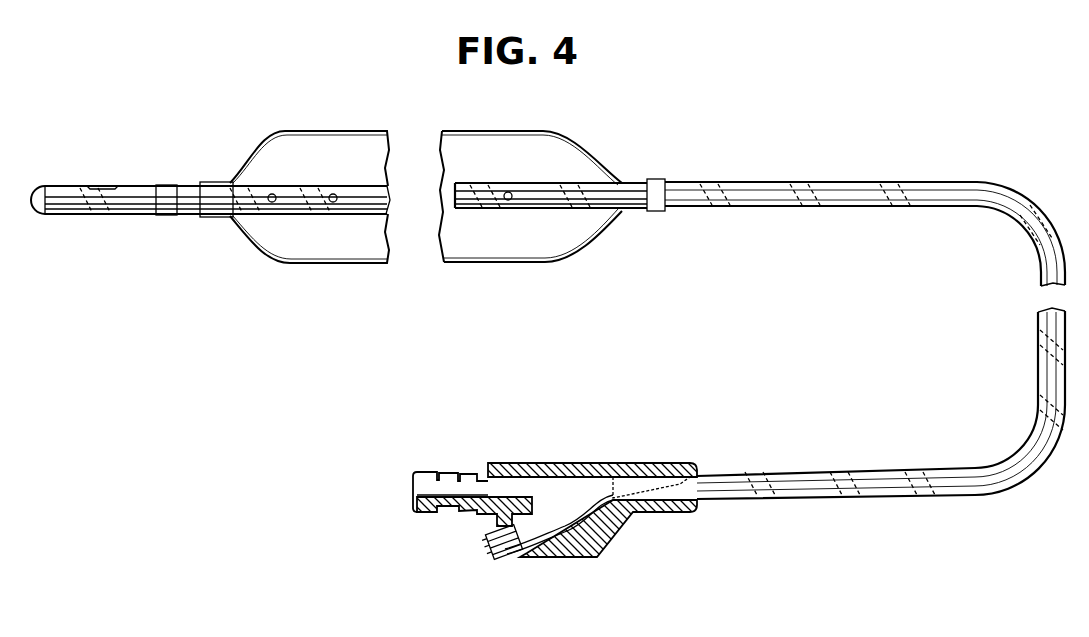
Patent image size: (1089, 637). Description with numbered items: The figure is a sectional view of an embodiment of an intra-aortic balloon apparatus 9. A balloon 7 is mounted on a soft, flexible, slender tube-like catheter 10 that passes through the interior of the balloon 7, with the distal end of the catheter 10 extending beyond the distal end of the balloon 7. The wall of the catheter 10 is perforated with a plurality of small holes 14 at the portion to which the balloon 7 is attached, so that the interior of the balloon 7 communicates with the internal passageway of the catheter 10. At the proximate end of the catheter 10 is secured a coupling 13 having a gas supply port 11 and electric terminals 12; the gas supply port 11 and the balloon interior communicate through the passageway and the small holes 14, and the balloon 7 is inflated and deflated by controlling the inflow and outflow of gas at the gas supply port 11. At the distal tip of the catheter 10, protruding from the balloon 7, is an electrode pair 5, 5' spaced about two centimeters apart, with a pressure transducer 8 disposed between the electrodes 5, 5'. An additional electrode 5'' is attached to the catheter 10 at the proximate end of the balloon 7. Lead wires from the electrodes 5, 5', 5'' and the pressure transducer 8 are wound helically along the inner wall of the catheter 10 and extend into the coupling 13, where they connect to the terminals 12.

The electrode 5 is at (39, 172).
The pressure transducer 8 is at (98, 196).
The electrode 5' is at (194, 174).
The balloon 7 is at (318, 248).
The small holes 14 is at (334, 194).
The additional electrode 5'' is at (560, 167).
The intra-aortic balloon apparatus 9 is at (716, 165).
The catheter 10 is at (941, 180).
The coupling 13 is at (583, 458).
The gas supply port 11 is at (418, 496).
The electric terminals 12 is at (494, 560).